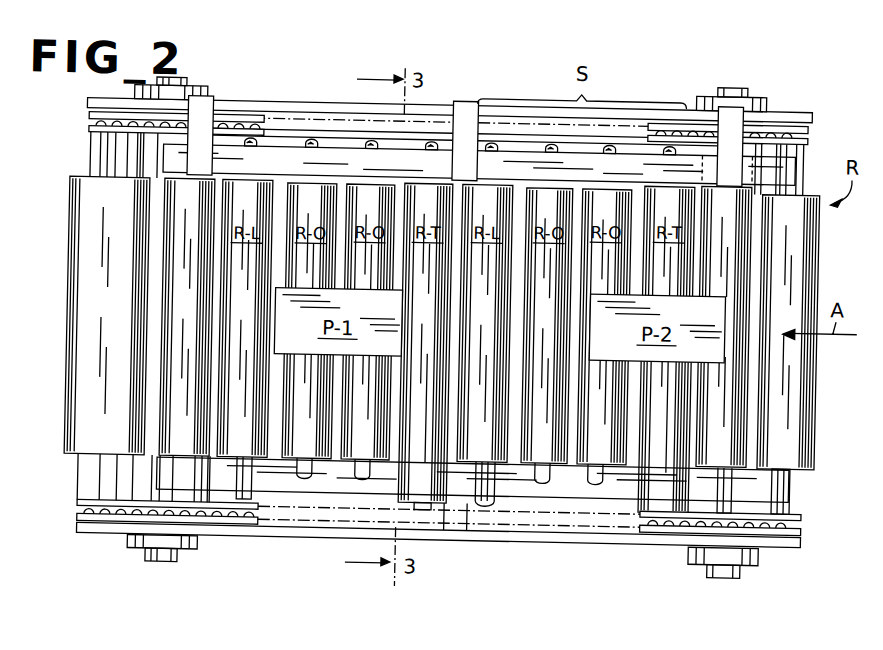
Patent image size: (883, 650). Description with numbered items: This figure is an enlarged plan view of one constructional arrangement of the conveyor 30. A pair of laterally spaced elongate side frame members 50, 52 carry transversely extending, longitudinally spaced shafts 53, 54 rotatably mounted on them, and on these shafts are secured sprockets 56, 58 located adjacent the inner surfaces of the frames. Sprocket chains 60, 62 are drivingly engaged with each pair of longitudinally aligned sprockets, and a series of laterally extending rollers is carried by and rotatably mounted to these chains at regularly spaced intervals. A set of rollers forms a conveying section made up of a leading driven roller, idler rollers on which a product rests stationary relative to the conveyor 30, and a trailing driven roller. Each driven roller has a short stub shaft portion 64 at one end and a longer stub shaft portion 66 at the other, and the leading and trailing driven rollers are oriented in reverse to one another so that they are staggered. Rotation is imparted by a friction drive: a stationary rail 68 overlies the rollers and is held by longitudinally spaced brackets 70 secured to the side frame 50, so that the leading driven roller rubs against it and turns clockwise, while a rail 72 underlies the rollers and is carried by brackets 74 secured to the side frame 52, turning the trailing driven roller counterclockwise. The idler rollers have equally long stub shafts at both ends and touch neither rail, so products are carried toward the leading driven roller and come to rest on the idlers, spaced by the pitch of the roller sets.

The conveyor 30 is at (767, 83).
The side frame member 50 is at (788, 106).
The side frame member 52 is at (554, 540).
The shaft 53 is at (157, 566).
The shaft 54 is at (751, 565).
The sprocket 56 is at (84, 126).
The sprocket 58 is at (802, 140).
The sprocket chain 60 is at (84, 136).
The sprocket chain 62 is at (213, 542).
The short stub shaft portion 64 is at (251, 144).
The longer stub shaft portion 66 is at (425, 183).
The stationary rail 68 is at (652, 165).
The bracket 70 is at (201, 109).
The rail 72 is at (776, 488).
The bracket 74 is at (474, 527).